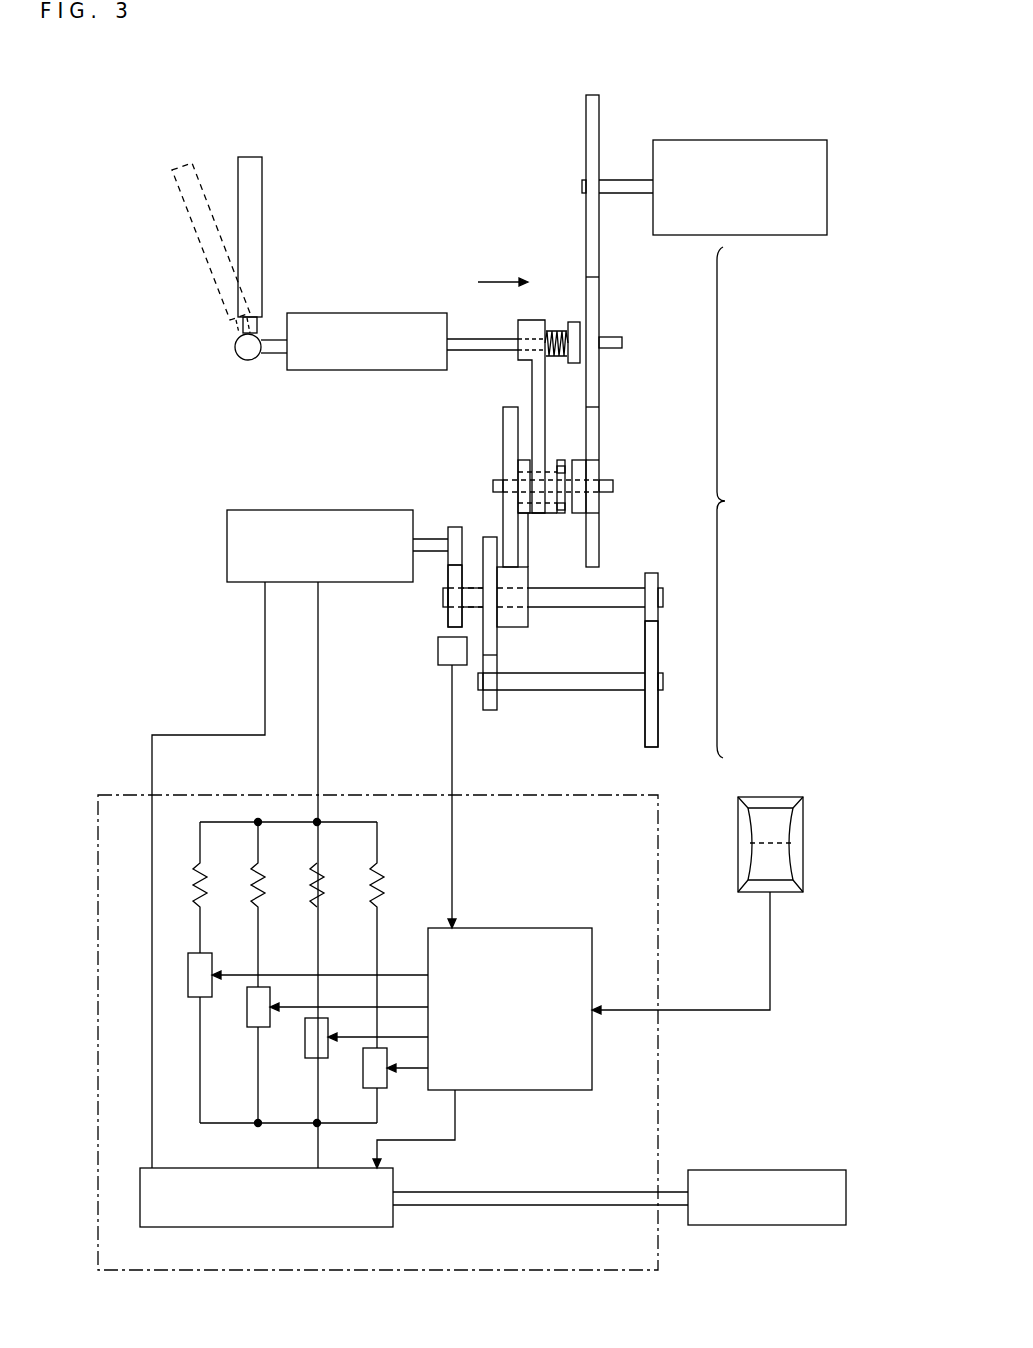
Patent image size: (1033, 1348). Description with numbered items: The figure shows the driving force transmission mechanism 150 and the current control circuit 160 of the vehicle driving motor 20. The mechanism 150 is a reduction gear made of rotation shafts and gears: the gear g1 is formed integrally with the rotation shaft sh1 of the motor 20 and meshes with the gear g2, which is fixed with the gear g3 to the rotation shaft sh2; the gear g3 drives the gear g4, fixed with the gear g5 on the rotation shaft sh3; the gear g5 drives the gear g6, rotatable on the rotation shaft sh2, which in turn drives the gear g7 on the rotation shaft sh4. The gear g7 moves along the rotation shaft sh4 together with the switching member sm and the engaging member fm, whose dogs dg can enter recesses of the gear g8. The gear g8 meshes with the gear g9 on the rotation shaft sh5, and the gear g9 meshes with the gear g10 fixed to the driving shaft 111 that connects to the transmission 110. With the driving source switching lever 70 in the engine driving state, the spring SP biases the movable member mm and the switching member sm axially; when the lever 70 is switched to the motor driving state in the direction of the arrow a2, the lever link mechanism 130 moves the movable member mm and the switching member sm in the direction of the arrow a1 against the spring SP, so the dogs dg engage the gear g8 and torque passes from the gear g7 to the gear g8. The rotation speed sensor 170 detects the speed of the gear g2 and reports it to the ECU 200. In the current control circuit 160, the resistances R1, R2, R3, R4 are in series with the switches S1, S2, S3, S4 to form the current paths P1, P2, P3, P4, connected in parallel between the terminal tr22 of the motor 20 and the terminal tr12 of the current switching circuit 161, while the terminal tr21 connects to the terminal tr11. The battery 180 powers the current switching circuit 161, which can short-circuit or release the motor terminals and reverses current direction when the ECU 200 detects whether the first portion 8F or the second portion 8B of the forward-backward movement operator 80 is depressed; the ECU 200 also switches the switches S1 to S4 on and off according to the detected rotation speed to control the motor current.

The driving source switching lever 70 is at (262, 172).
The arrow a2 is at (240, 143).
The lever link mechanism 130 is at (295, 313).
The movable member mm is at (458, 337).
The arrow a1 is at (506, 280).
The switching member sm is at (518, 365).
The spring SP is at (555, 330).
The gear g10 is at (599, 250).
The gear g9 is at (599, 390).
The gear g8 is at (599, 443).
The rotation shaft sh5 is at (622, 337).
The driving shaft 111 is at (630, 180).
The transmission 110 is at (760, 140).
The rotation shaft sh4 is at (613, 484).
The gear g7 is at (503, 420).
The dogs dg is at (560, 465).
The engaging member fm is at (552, 515).
The vehicle driving motor 20 is at (260, 510).
The terminal tr21 is at (263, 584).
The terminal tr22 is at (320, 584).
The rotation shaft sh1 is at (430, 538).
The gear g1 is at (451, 527).
The gear g2 is at (448, 623).
The rotation shaft sh2 is at (575, 608).
The gear g5 is at (497, 700).
The gear g6 is at (500, 640).
The gear g3 is at (658, 578).
The gear g4 is at (645, 731).
The rotation shaft sh3 is at (555, 692).
The rotation speed sensor 170 is at (438, 658).
The driving force transmission mechanism 150 is at (744, 502).
The current control circuit 160 is at (122, 795).
The resistance R1 is at (199, 866).
The resistance R2 is at (257, 866).
The resistance R3 is at (316, 866).
The resistance R4 is at (376, 866).
The current path P1 is at (198, 947).
The current path P2 is at (256, 947).
The current path P3 is at (315, 947).
The current path P4 is at (375, 947).
The switch S1 is at (191, 997).
The switch S2 is at (250, 1027).
The switch S3 is at (308, 1058).
The switch S4 is at (363, 1062).
The ECU 200 is at (553, 928).
The forward-backward movement operator 80 is at (780, 797).
The first portion 8F is at (765, 818).
The second portion 8B is at (765, 858).
The current switching circuit 161 is at (148, 1227).
The terminal tr11 is at (152, 1167).
The terminal tr12 is at (318, 1166).
The battery 180 is at (732, 1170).